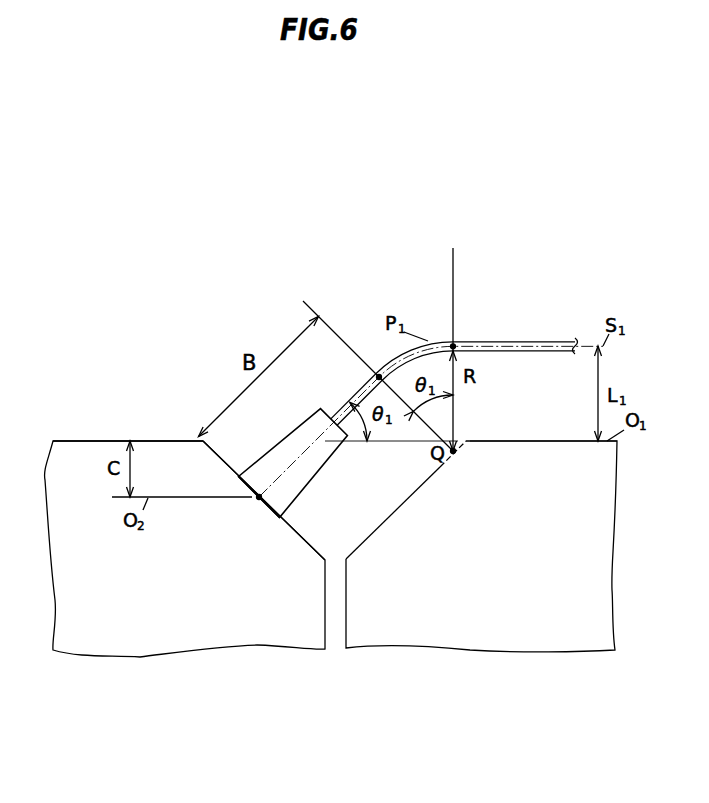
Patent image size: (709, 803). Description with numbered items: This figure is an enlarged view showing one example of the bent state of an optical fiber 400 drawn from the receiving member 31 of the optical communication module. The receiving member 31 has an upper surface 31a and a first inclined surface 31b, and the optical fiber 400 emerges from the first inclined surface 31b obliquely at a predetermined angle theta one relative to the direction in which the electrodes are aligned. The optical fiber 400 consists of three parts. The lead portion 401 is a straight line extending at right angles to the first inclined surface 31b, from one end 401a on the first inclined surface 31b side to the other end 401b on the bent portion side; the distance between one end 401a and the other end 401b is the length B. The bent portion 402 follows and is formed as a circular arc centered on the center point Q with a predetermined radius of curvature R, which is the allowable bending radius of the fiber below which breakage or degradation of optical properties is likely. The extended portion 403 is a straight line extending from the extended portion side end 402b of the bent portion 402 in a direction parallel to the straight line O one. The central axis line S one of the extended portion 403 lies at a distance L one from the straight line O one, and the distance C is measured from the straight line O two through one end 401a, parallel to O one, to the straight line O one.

The receiving member 31 is at (192, 658).
The upper surface of receiving member 31a is at (102, 440).
The first inclined surface 31b is at (299, 533).
The optical fiber 400 is at (397, 379).
The lead portion 401 is at (305, 303).
The one end of lead portion 401a is at (259, 500).
The other end of lead portion 401b is at (376, 376).
The bent portion 402 is at (453, 246).
The extended portion side end of bent portion 402b is at (455, 344).
The extended portion 403 is at (612, 239).